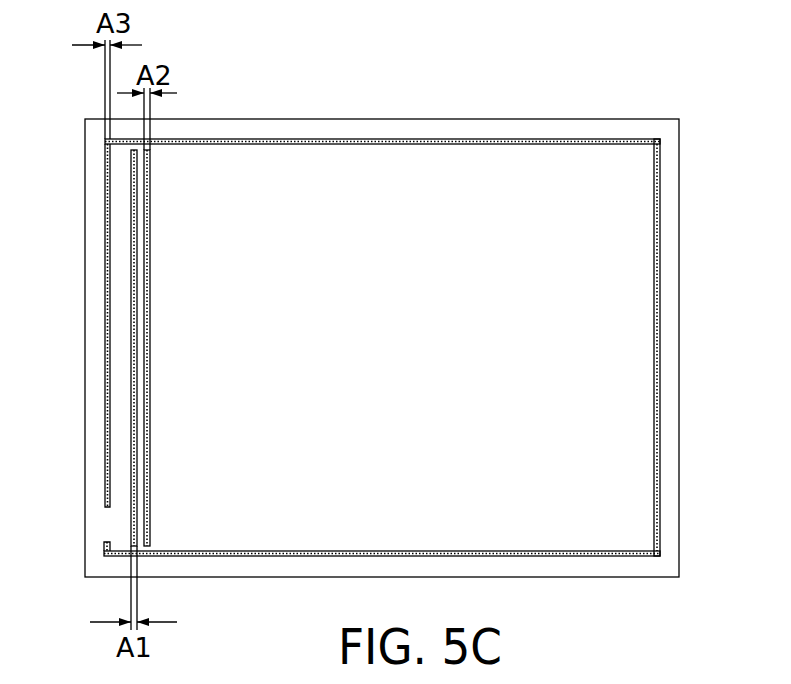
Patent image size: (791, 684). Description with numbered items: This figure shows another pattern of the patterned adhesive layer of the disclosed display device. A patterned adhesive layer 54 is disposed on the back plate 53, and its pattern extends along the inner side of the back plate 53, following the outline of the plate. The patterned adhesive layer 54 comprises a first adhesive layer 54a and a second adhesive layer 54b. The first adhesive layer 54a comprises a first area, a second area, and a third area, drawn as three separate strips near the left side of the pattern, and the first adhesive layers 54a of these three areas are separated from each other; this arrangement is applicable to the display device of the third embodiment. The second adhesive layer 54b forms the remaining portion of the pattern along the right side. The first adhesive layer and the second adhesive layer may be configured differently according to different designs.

The back plate 53 is at (85, 175).
The patterned adhesive layer 54 is at (333, 139).
The first adhesive layer 54a is at (105, 455).
The second adhesive layer 54b is at (660, 233).